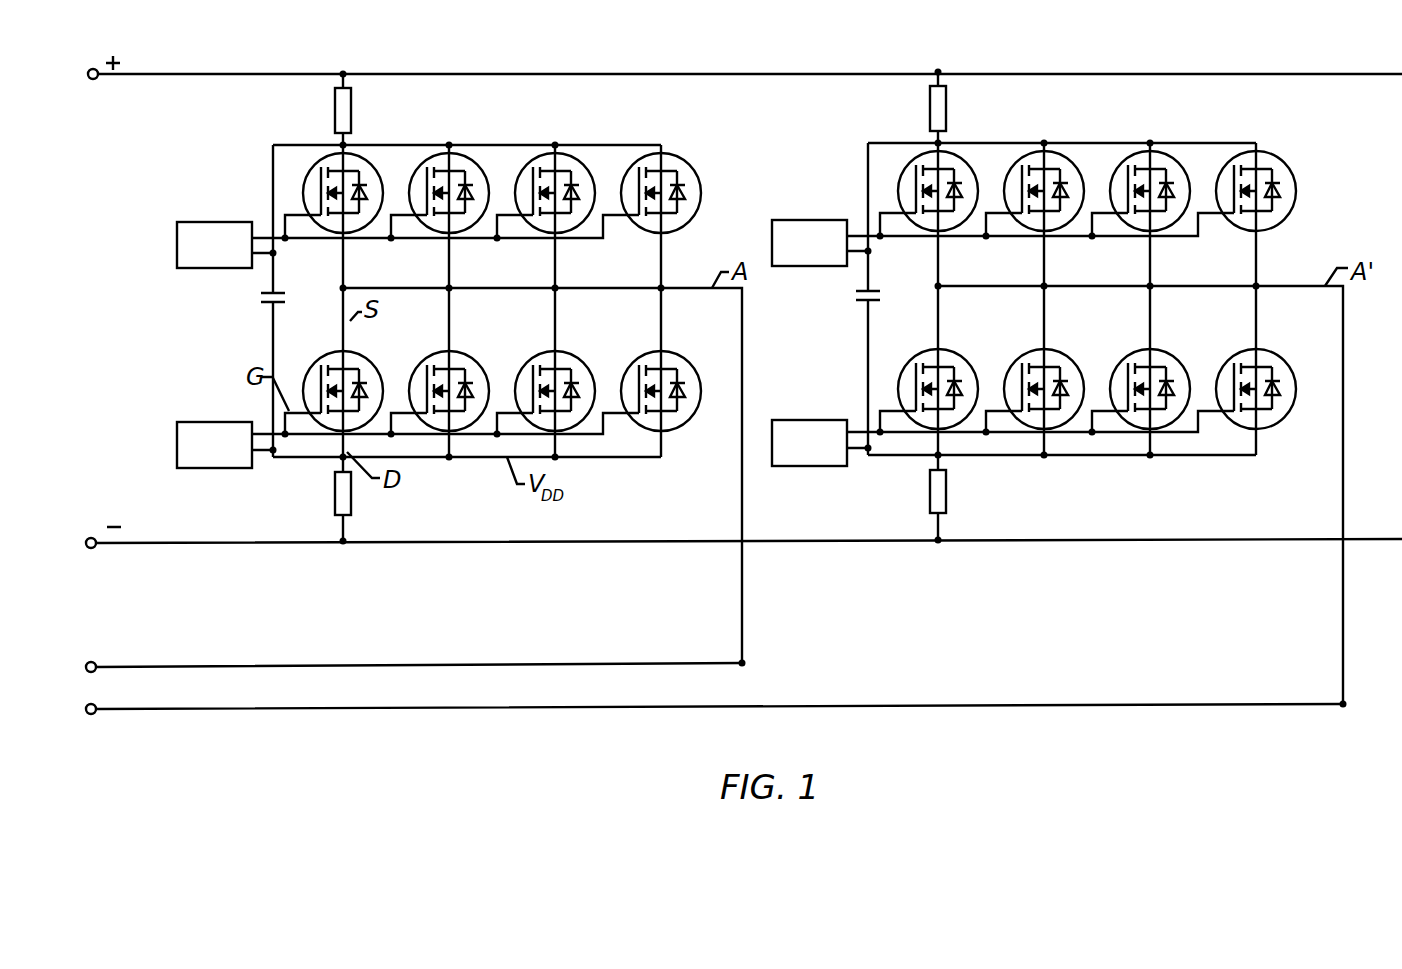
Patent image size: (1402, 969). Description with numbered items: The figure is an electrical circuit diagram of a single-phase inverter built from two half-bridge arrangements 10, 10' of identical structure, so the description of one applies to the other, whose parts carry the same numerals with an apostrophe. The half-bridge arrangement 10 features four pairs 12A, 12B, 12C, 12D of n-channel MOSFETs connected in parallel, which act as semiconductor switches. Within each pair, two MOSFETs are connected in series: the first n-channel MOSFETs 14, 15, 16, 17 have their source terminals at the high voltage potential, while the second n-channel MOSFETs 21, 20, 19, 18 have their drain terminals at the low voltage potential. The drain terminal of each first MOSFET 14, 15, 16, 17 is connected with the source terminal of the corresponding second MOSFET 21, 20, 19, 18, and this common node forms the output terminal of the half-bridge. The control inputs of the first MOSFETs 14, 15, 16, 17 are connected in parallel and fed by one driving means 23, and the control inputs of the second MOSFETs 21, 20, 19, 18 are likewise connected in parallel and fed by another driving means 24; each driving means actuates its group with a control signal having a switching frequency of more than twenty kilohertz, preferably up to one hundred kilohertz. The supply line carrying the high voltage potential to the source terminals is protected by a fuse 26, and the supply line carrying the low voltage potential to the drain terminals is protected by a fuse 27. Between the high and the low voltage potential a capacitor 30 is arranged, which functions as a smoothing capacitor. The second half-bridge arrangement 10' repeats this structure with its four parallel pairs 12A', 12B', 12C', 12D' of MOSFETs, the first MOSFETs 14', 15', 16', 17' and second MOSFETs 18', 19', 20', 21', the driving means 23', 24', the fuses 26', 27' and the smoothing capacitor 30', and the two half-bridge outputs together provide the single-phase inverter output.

The half-bridge arrangement 10 is at (440, 394).
The pair of n-channel MOSFETs 12A is at (391, 290).
The pair of n-channel MOSFETs 12B is at (494, 282).
The pair of n-channel MOSFETs 12C is at (596, 281).
The pair of n-channel MOSFETs 12D is at (703, 281).
The first n-channel MOSFET 14 is at (675, 205).
The first n-channel MOSFET 15 is at (572, 215).
The first n-channel MOSFET 16 is at (463, 216).
The first n-channel MOSFET 17 is at (357, 216).
The second n-channel MOSFET 18 is at (357, 379).
The second n-channel MOSFET 19 is at (459, 379).
The second n-channel MOSFET 20 is at (567, 379).
The second n-channel MOSFET 21 is at (672, 379).
The driving means 23 is at (408, 223).
The driving means 24 is at (408, 459).
The fuse 26 is at (372, 103).
The fuse 27 is at (374, 506).
The capacitor 30 is at (247, 319).
The half-bridge arrangement 10' is at (1135, 423).
The pair of n-channel MOSFETs 12A' is at (991, 288).
The pair of n-channel MOSFETs 12B' is at (1097, 280).
The pair of n-channel MOSFETs 12C' is at (1199, 280).
The pair of n-channel MOSFETs 12D' is at (1306, 278).
The first n-channel MOSFET 14' is at (1275, 209).
The first n-channel MOSFET 15' is at (1166, 214).
The first n-channel MOSFET 16' is at (1061, 215).
The first n-channel MOSFET 17' is at (954, 216).
The second n-channel MOSFET 18' is at (953, 373).
The second n-channel MOSFET 19' is at (1061, 373).
The second n-channel MOSFET 20' is at (1169, 372).
The second n-channel MOSFET 21' is at (1275, 372).
The driving means 23' is at (1003, 217).
The driving means 24' is at (1001, 462).
The fuse 26' is at (904, 101).
The fuse 27' is at (975, 505).
The capacitor 30' is at (840, 318).